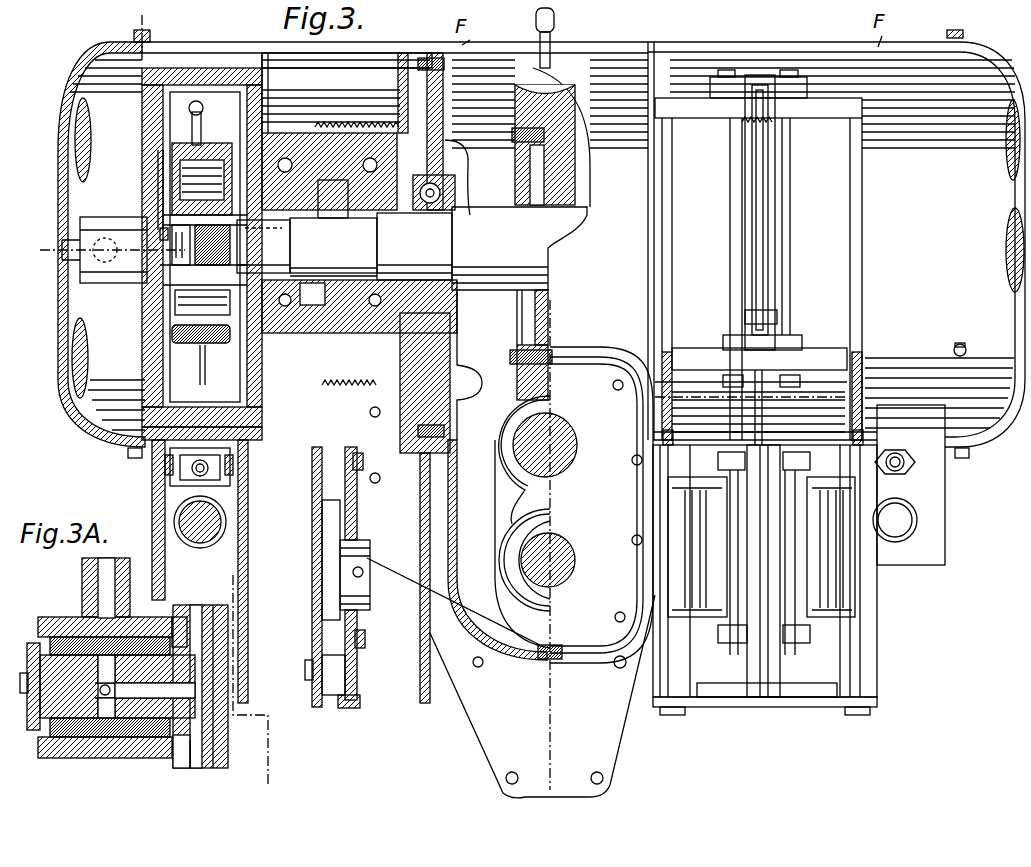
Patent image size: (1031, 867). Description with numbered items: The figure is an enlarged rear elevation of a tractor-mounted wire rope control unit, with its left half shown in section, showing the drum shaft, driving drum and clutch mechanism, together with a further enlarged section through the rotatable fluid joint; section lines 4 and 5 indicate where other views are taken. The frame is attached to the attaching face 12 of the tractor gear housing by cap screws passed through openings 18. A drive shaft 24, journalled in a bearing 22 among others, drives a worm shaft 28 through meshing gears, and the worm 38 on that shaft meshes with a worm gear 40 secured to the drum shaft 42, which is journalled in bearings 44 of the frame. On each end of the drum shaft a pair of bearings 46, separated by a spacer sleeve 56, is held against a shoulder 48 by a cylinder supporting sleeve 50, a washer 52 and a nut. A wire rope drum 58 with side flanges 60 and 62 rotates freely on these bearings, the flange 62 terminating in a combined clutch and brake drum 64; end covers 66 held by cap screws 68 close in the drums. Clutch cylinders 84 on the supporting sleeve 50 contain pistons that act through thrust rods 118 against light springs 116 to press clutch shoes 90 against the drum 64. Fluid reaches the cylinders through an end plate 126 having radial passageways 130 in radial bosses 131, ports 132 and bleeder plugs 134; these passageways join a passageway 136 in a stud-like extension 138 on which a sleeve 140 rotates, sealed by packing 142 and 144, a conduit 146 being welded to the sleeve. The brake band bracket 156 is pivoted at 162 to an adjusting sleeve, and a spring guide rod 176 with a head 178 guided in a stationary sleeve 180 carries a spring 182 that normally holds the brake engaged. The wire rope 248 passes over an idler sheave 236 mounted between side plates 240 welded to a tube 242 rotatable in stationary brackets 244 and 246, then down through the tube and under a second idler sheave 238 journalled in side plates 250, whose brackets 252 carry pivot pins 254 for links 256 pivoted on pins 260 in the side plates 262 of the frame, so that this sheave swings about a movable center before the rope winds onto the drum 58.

In FIG. 3, the section line 4- 4 is at (547, 76).
In FIG. 3, the section line 5- 5 is at (136, 22).
In FIG. 3, the attaching face 12 is at (612, 750).
In FIG. 3, the openings 18 is at (620, 668).
In FIG. 3, the bearing 22 is at (548, 536).
In FIG. 3, the drive shaft 24 is at (550, 570).
In FIG. 3, the worm shaft 28 is at (548, 452).
In FIG. 3, the worm 38 is at (540, 412).
In FIG. 3, the worm gear 40 is at (565, 92).
In FIG. 3, the drum shaft 42 is at (519, 323).
In FIG. 3, the bearings 44 is at (441, 192).
In FIG. 3, the bearings 46 is at (296, 220).
In FIG. 3, the shoulder 48 is at (378, 238).
In FIG. 3, the cylinder supporting sleeve 50 is at (255, 214).
In FIG. 3, the washer 52 is at (250, 274).
In FIG. 3, the spacer sleeve 56 is at (318, 280).
In FIG. 3, the wire rope drum 58 is at (318, 133).
In FIG. 3, the side flange 60 is at (400, 66).
In FIG. 3, the side flange 62 is at (262, 82).
In FIG. 3, the combined clutch and brake drum 64 is at (262, 62).
In FIG. 3, the end cover 66 is at (75, 92).
In FIG. 3, the cap screws 68 is at (134, 36).
In FIG. 3, the clutch cylinder 84 is at (201, 340).
In FIG. 3, the clutch shoe 90 is at (160, 100).
In FIG. 3, the light spring 116 is at (202, 313).
In FIG. 3, the thrust rod 118 is at (192, 130).
In FIG. 3, the end plate 126 is at (165, 195).
In FIG. 3, the radial passageways 130 is at (165, 298).
In FIG. 3A, the radial passageways 130 is at (208, 605).
In FIG. 3, the radial bosses 131 is at (160, 182).
In FIG. 3A, the radial bosses 131 is at (192, 755).
In FIG. 3, the ports 132 is at (165, 332).
In FIG. 3, the bleeder plugs 134 is at (165, 345).
In FIG. 3A, the passageway 136 is at (142, 745).
In FIG. 3A, the stud-like extension 138 is at (62, 745).
In FIG. 3, the sleeve 140 is at (90, 268).
In FIG. 3A, the sleeve 140 is at (48, 617).
In FIG. 3A, the packing 142 is at (117, 686).
In FIG. 3A, the packing 144 is at (146, 686).
In FIG. 3A, the conduit 146 is at (131, 590).
In FIG. 3, the bracket 156 is at (226, 480).
In FIG. 3, the pivot 162 is at (232, 463).
In FIG. 3, the spring guide rod 176 is at (222, 530).
In FIG. 3, the head 178 is at (905, 528).
In FIG. 3, the stationary sleeve 180 is at (917, 518).
In FIG. 3, the spring 182 is at (228, 518).
In FIG. 3, the idler sheave 236 is at (763, 185).
In FIG. 3, the idler sheave 238 is at (356, 676).
In FIG. 3, the side plates 240 is at (776, 140).
In FIG. 3, the tube 242 is at (770, 300).
In FIG. 3, the stationary bracket 244 is at (858, 116).
In FIG. 3, the stationary bracket 246 is at (751, 366).
In FIG. 3, the wire rope 248 is at (362, 124).
In FIG. 3, the side plates 250 is at (316, 667).
In FIG. 3, the brackets 252 is at (810, 632).
In FIG. 3, the pivot pins 254 is at (764, 571).
In FIG. 3, the links 256 is at (665, 513).
In FIG. 3, the pins 260 is at (670, 720).
In FIG. 3, the side plates 262 is at (248, 685).